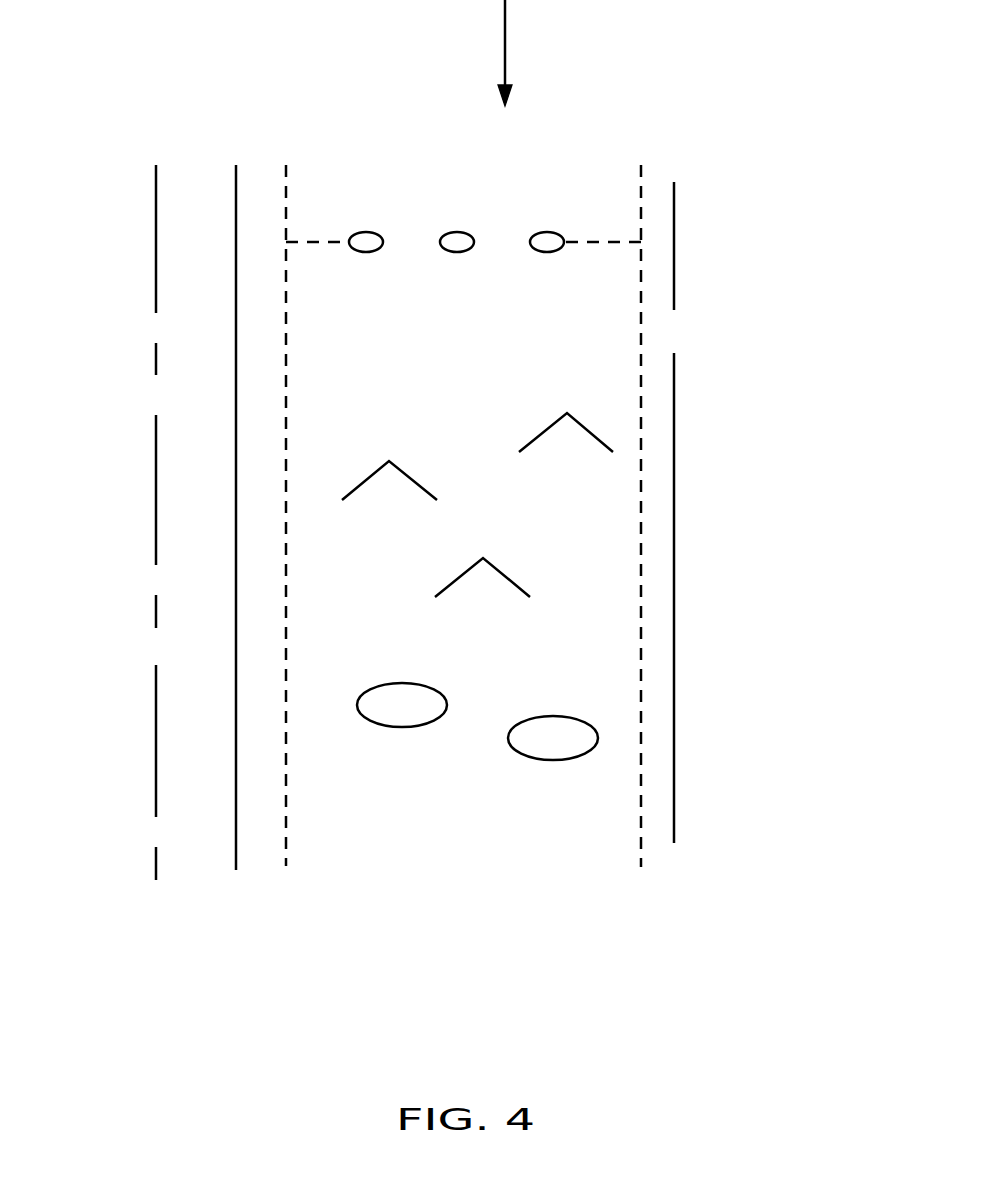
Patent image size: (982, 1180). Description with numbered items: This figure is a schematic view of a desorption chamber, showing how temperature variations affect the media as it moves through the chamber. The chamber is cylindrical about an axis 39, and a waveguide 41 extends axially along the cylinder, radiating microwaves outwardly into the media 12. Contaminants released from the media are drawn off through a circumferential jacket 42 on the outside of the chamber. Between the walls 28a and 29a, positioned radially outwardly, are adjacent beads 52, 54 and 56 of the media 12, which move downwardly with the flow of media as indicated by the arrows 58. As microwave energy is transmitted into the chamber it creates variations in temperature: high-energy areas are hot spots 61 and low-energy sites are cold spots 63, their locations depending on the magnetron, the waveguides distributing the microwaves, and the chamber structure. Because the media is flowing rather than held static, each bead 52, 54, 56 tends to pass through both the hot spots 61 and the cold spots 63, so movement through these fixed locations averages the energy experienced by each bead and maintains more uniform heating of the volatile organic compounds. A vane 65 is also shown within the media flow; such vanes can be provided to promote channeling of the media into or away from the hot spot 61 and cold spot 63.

The media 12 is at (587, 618).
The wall 28a is at (288, 168).
The wall 29a is at (641, 287).
The axis 39 is at (156, 492).
The waveguide 41 is at (236, 828).
The circumferential jacket 42 is at (655, 766).
The bead 52 is at (367, 232).
The bead 54 is at (458, 232).
The bead 56 is at (548, 232).
The arrows 58 is at (525, 53).
The hot spot 61 is at (394, 708).
The cold spot 63 is at (553, 738).
The vane 65 is at (588, 430).